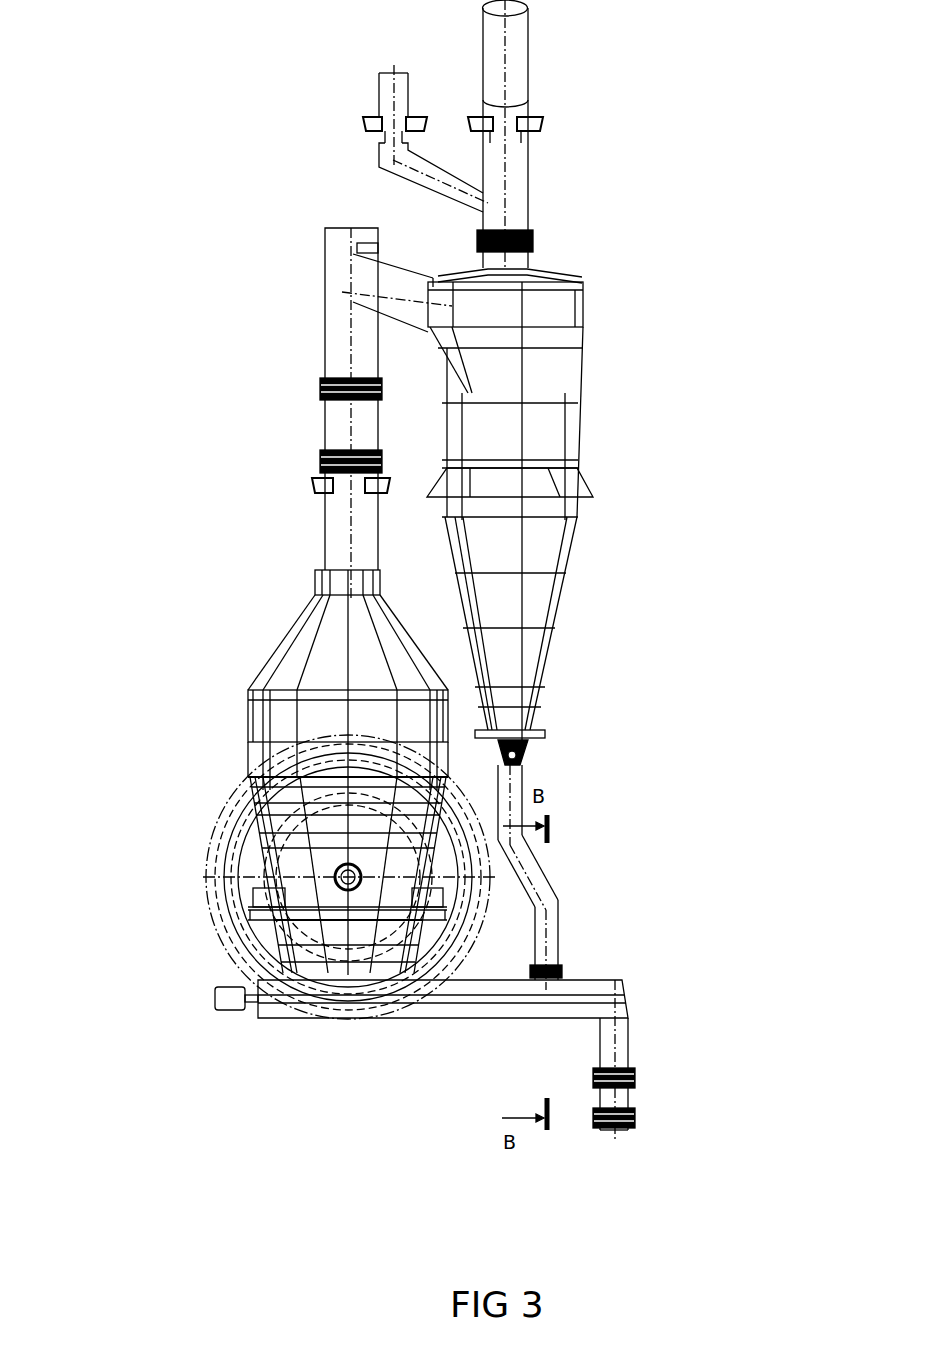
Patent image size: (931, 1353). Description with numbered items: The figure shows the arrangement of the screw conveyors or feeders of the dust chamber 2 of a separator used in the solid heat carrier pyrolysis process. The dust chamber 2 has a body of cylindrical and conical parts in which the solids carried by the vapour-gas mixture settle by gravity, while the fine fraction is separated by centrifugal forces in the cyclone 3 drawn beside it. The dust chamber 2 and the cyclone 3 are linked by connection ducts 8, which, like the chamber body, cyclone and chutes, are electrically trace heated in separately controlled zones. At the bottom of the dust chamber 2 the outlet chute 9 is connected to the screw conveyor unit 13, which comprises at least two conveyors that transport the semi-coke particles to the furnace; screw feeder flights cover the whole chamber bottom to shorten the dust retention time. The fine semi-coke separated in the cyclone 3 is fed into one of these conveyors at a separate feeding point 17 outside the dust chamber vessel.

The dust chamber 2 is at (293, 663).
The cyclone 3 is at (542, 433).
The connection ducts 8 is at (390, 273).
The outlet chute 9 is at (347, 965).
The screw conveyor unit 13 is at (470, 1012).
The feeding point 17 is at (558, 970).